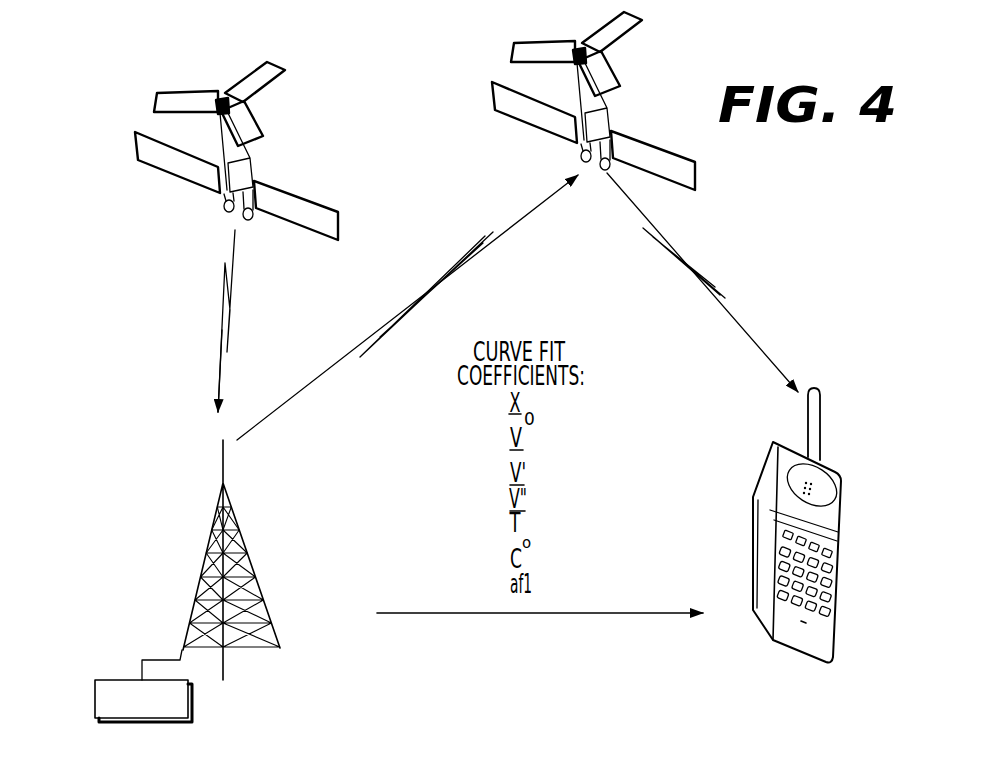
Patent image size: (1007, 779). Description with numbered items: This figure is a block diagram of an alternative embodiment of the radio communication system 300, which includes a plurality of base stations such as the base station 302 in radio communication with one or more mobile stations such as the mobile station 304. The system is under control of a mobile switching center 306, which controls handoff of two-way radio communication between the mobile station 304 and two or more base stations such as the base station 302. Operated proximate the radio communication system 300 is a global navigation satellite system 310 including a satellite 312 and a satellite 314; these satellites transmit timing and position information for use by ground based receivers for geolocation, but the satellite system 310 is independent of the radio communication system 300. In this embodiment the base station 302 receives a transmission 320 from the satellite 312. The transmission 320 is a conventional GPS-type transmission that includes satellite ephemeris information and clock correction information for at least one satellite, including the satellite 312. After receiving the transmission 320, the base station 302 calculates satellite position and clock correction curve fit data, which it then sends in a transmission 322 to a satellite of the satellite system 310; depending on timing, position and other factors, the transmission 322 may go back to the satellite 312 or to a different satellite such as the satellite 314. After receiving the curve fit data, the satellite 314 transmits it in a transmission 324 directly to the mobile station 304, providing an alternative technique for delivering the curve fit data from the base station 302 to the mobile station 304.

The radio communication system 300 is at (834, 181).
The base station 302 is at (200, 575).
The mobile station 304 is at (828, 518).
The mobile switching center 306 is at (193, 703).
The global navigation satellite system 310 is at (195, 151).
The satellite 312 is at (173, 165).
The satellite 314 is at (527, 115).
The transmission 320 is at (222, 333).
The transmission 322 is at (398, 308).
The transmission 324 is at (710, 303).